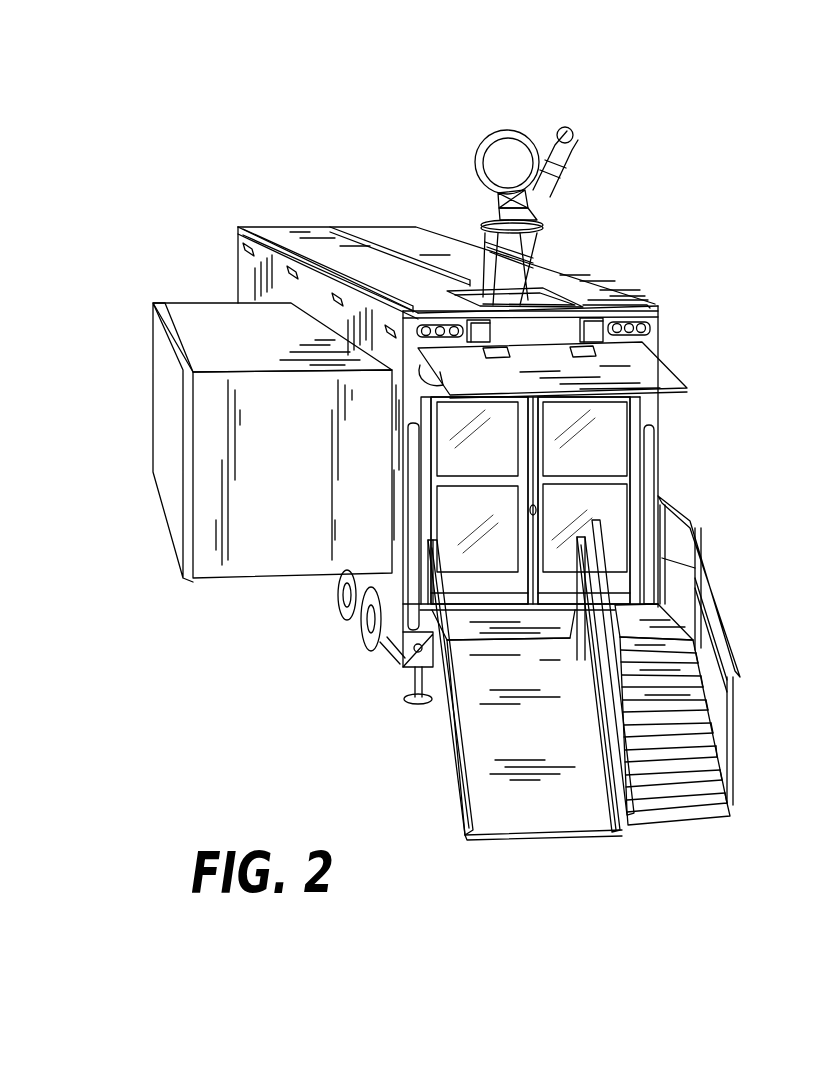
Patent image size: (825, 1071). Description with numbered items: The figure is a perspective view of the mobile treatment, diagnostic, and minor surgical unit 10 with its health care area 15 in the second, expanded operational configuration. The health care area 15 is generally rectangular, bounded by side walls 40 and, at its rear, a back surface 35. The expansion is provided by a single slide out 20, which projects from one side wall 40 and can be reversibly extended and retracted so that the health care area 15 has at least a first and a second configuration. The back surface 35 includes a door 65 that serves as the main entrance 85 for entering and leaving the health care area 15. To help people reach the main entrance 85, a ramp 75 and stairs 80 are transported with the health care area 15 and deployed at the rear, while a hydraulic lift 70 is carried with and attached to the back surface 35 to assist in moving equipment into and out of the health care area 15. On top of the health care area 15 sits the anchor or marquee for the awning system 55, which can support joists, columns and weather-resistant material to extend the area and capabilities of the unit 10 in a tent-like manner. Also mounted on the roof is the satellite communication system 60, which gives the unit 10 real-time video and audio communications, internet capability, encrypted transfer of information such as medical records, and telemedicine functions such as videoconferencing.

The mobile treatment, diagnostic, and minor surgical unit 10 is at (270, 636).
The health care area 15 is at (272, 220).
The slide out 20 is at (213, 330).
The back surface 35 is at (446, 401).
The side walls 40 is at (248, 262).
The awning system 55 is at (378, 232).
The satellite communication system 60 is at (475, 157).
The door 65 is at (510, 465).
The hydraulic lift 70 is at (463, 626).
The ramp 75 is at (485, 715).
The stairs 80 is at (690, 742).
The main entrance 85 is at (667, 826).